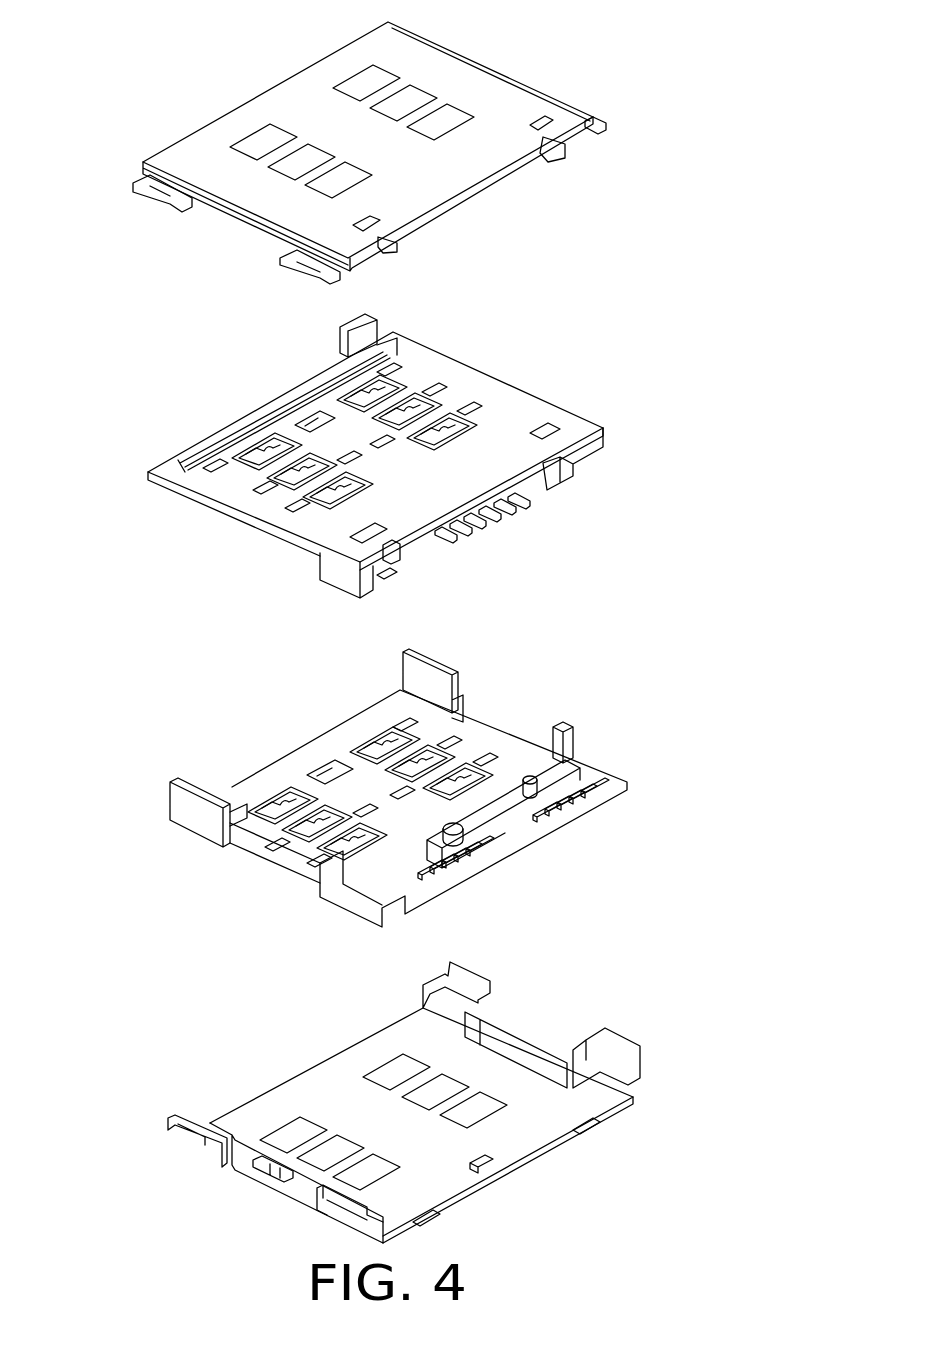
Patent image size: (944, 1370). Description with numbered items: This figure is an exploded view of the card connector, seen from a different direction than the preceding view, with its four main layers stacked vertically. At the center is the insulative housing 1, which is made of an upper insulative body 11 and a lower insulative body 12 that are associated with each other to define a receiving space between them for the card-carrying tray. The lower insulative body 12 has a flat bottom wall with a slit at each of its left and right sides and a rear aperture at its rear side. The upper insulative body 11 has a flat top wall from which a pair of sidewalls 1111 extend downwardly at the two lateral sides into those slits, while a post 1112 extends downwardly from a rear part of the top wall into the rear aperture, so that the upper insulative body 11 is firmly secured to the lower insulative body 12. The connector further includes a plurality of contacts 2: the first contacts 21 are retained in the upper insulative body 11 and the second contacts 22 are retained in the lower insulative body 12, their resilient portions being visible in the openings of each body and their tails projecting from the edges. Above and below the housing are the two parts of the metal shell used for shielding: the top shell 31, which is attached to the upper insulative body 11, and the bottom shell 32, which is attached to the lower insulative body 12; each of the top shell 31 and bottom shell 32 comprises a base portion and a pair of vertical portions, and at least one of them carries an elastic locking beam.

The insulative housing 1 is at (351, 620).
The upper insulative body 11 is at (362, 781).
The lower insulative body 12 is at (371, 456).
The sidewalls 1111 is at (198, 815).
The post 1112 is at (458, 833).
The contacts 2 is at (647, 540).
The first contacts 21 is at (463, 770).
The second contacts 22 is at (377, 483).
The top shell 31 is at (268, 1060).
The bottom shell 32 is at (265, 70).